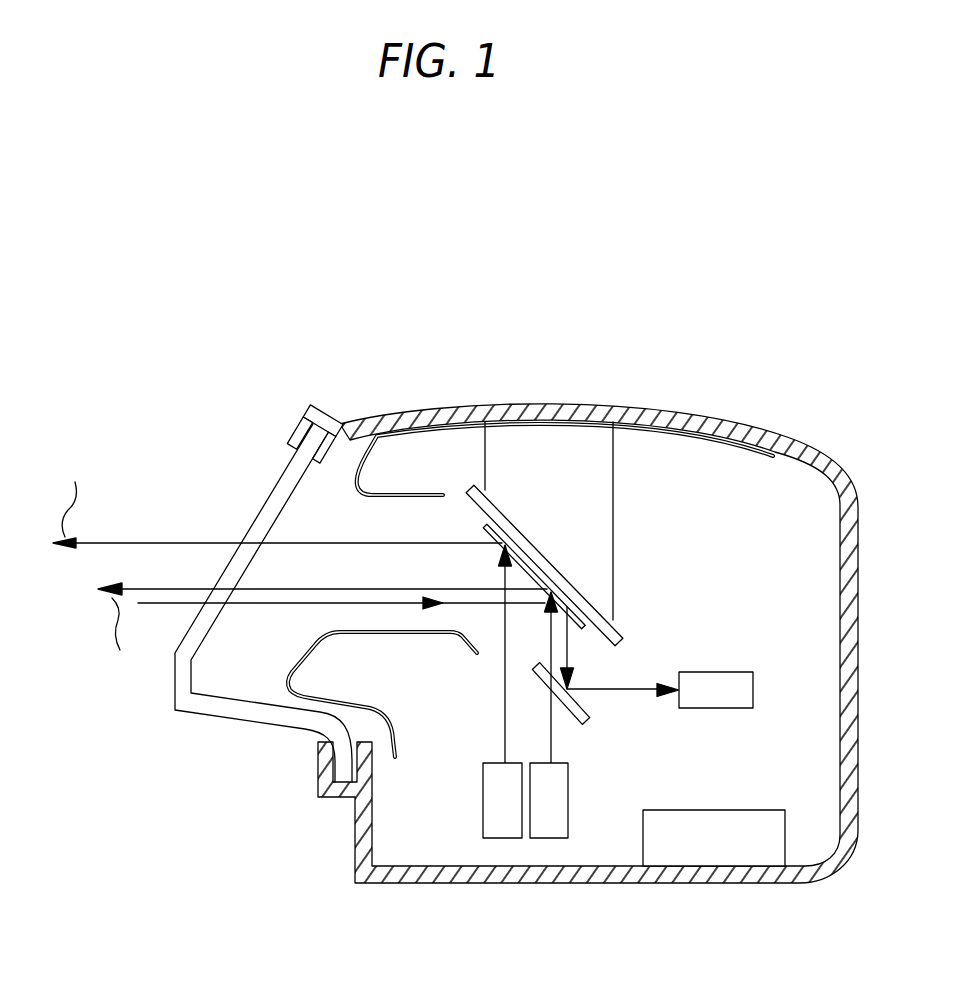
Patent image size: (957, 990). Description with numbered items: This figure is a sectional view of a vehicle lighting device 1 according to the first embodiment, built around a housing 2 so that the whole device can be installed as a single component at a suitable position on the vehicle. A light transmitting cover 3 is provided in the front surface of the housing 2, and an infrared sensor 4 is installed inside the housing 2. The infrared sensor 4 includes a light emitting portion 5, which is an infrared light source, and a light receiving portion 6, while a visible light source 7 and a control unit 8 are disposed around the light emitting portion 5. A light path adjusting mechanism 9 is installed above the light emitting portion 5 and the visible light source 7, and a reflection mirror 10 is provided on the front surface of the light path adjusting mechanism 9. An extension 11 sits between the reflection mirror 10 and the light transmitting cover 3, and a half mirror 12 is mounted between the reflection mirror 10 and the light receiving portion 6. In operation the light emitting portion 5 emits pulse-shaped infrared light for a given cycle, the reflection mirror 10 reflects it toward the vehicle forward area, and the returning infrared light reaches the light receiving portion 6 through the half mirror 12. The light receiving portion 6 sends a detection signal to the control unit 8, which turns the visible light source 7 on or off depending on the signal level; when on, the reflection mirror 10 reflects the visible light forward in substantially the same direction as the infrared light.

The vehicle lighting device 1 is at (457, 360).
The housing 2 is at (710, 423).
The light transmitting cover 3 is at (275, 507).
The infrared sensor 4 is at (695, 730).
The light emitting portion 5 is at (550, 827).
The light receiving portion 6 is at (722, 683).
The visible light source 7 is at (493, 803).
The control unit 8 is at (735, 828).
The light path adjusting mechanism 9 is at (577, 571).
The reflection mirror 10 is at (528, 572).
The extension 11 is at (305, 650).
The half mirror 12 is at (582, 698).